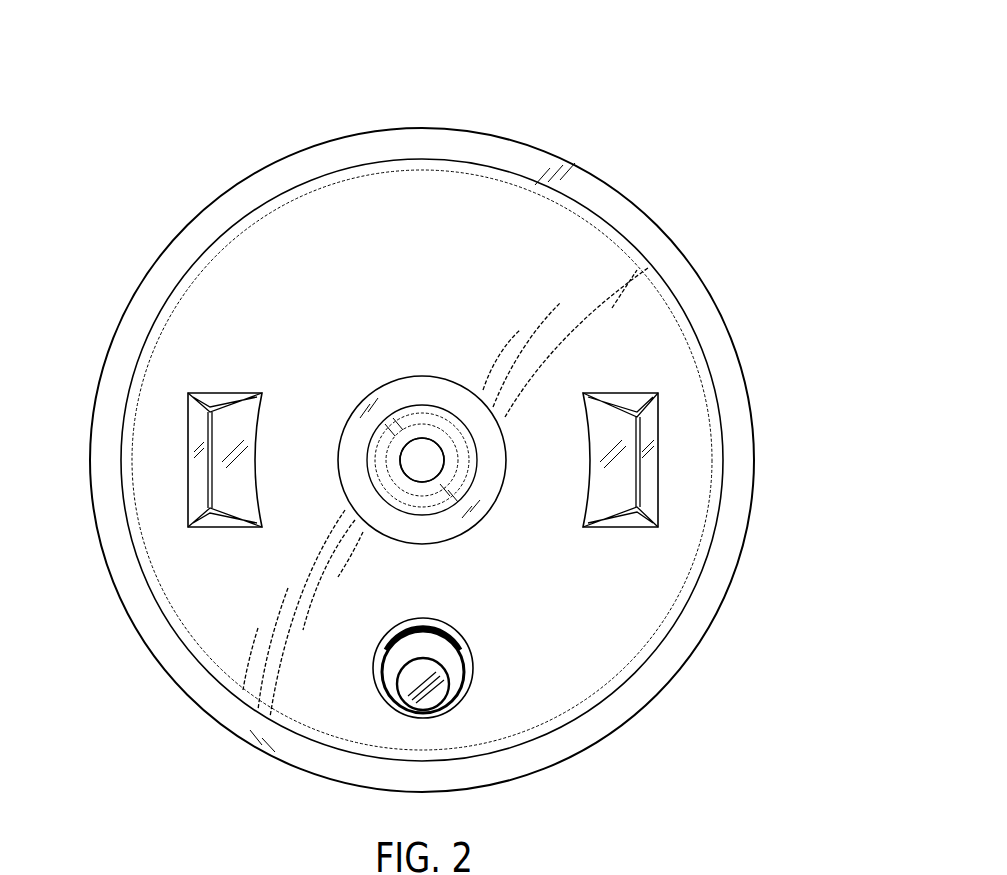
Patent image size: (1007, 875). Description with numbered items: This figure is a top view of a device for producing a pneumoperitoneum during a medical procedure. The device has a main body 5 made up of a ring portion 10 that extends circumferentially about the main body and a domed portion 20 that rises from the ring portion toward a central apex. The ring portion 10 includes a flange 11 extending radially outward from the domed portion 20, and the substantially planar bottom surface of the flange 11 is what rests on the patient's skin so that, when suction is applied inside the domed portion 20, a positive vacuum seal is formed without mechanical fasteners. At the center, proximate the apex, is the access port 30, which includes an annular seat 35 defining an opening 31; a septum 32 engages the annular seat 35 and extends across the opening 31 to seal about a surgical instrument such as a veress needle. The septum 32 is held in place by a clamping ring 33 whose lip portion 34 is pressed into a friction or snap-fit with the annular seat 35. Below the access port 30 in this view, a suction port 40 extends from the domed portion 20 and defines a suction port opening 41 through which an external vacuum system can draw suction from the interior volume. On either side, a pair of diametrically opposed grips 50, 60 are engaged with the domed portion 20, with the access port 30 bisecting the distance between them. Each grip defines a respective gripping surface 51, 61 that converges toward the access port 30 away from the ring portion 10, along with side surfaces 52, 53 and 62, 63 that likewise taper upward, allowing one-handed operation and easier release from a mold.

The main body 5 is at (120, 218).
The ring portion 10 is at (123, 612).
The flange 11 is at (178, 656).
The domed portion 20 is at (585, 247).
The access port 30 is at (367, 427).
The opening 31 is at (435, 453).
The septum 32 is at (410, 454).
The clamping ring 33 is at (426, 413).
The lip portion 34 is at (408, 422).
The annular seat 35 is at (432, 433).
The suction port 40 is at (485, 655).
The suction port opening 41 is at (440, 690).
The grip 50 is at (660, 392).
The gripping surface 51 is at (647, 425).
The side surface 52 is at (648, 529).
The side surface 53 is at (630, 403).
The grip 60 is at (172, 402).
The gripping surface 61 is at (193, 452).
The side surface 62 is at (190, 525).
The side surface 63 is at (208, 402).